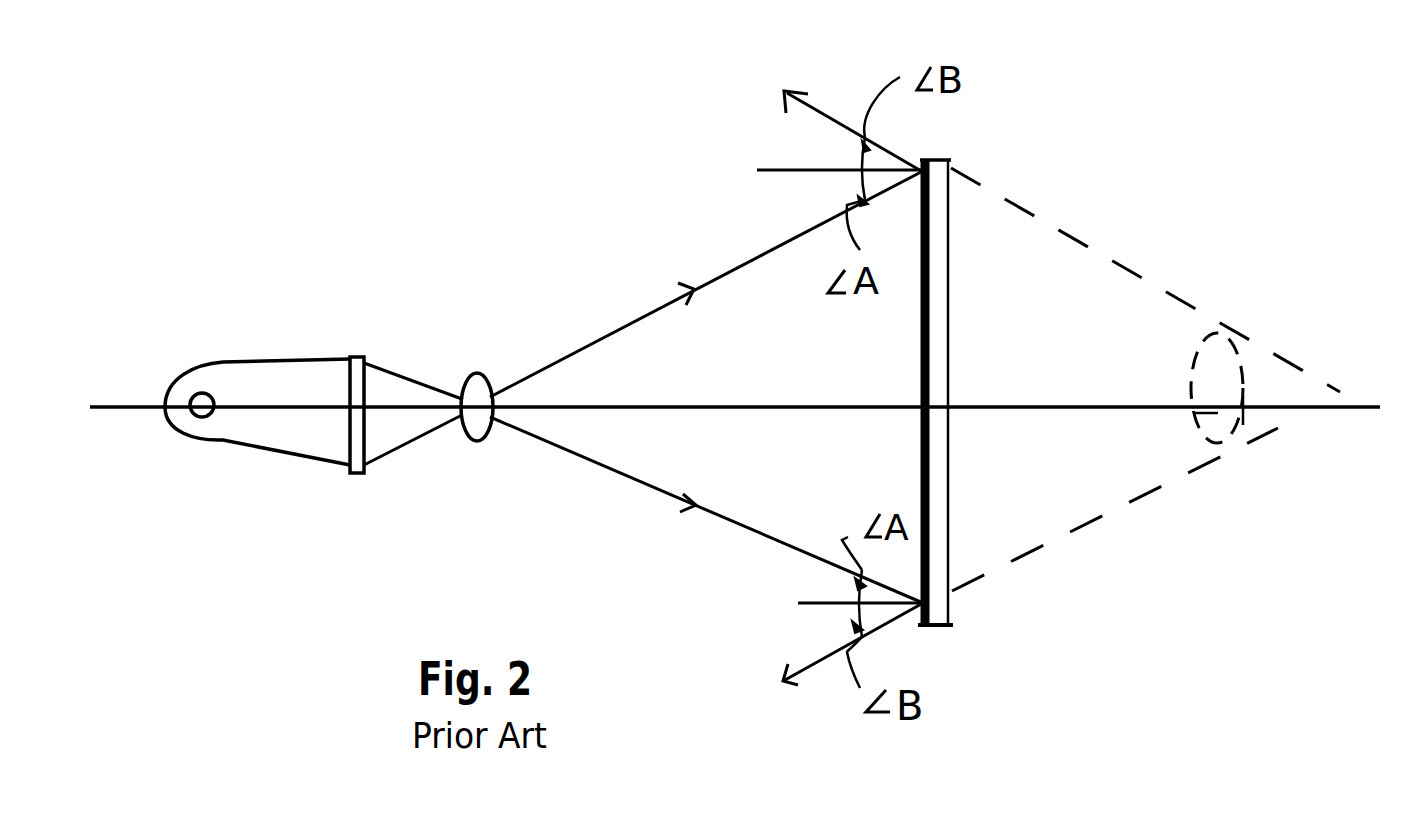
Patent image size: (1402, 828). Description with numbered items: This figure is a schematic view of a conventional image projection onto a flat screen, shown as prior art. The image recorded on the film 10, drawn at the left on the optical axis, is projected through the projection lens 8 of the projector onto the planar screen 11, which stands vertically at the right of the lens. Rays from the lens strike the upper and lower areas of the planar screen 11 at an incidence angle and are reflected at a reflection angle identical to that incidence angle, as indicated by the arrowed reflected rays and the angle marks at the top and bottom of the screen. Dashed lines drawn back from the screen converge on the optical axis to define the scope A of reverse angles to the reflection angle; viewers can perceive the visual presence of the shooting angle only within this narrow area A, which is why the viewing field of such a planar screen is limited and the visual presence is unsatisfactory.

The projection lens 8 is at (488, 371).
The film 10 is at (364, 473).
The planar screen 11 is at (949, 303).
The scope of reverse angles A is at (1230, 362).